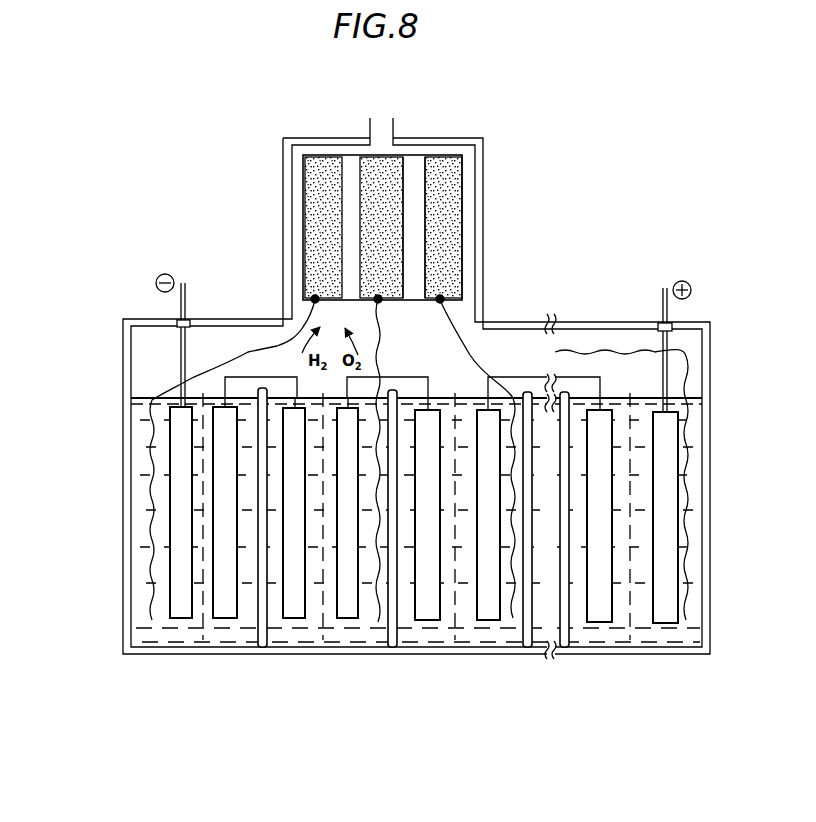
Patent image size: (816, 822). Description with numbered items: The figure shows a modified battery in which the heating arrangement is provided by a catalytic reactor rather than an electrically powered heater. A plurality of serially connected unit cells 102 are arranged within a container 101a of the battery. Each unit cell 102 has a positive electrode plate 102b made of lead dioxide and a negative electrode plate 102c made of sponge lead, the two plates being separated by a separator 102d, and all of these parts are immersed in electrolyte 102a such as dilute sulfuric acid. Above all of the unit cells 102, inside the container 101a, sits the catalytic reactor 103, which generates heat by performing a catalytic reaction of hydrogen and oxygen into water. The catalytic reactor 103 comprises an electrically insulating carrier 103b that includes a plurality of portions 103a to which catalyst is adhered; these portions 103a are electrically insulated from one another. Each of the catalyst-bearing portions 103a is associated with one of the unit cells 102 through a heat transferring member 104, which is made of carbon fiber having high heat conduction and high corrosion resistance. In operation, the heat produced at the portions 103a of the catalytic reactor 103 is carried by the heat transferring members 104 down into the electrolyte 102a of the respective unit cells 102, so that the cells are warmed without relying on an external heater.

The container 101a is at (123, 482).
The unit cells 102 is at (411, 553).
The electrolyte 102a is at (307, 637).
The positive electrode plate 102b is at (352, 614).
The negative electrode plate 102c is at (290, 620).
The separator 102d is at (323, 620).
The catalytic reactor 103 is at (383, 197).
The portions 103a is at (313, 172).
The electrically insulating carrier 103b is at (413, 222).
The heat transferring member 104 is at (248, 352).